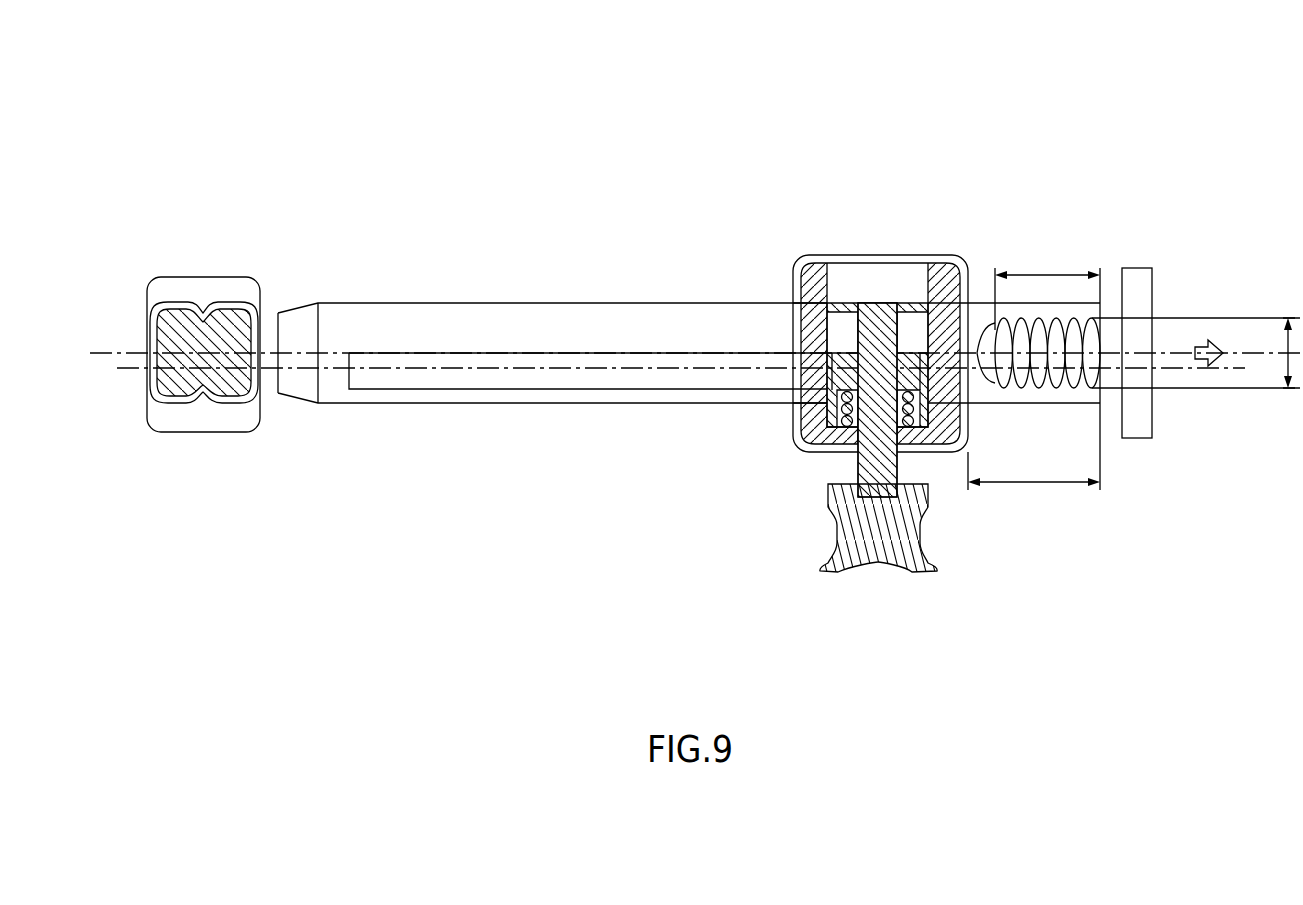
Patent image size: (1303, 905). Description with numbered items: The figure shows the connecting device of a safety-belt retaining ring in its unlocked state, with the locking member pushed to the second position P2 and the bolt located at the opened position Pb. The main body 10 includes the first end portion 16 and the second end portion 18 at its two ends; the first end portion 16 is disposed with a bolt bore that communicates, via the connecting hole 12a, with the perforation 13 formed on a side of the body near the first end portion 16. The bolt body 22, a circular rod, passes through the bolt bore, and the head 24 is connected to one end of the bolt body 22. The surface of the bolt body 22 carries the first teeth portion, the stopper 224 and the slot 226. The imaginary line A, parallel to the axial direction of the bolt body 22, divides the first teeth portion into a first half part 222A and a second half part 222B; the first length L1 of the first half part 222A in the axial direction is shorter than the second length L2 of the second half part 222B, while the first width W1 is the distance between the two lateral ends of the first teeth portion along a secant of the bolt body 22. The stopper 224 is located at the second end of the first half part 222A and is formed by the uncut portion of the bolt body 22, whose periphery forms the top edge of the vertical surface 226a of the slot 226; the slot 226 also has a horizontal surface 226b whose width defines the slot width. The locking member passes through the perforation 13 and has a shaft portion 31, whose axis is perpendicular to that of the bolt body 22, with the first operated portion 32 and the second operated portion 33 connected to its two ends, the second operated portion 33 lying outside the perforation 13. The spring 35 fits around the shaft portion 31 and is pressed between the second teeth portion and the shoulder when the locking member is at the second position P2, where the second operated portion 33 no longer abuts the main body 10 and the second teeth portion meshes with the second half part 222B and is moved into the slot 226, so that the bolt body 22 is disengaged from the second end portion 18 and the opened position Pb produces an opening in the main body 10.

The main body 10 is at (131, 372).
The imaginary line A is at (110, 353).
The second end portion 18 is at (198, 277).
The bolt body 22 is at (620, 303).
The slot 226 is at (488, 190).
The vertical surface 226a is at (420, 355).
The horizontal surface 226b is at (495, 368).
The first end portion 16 is at (806, 256).
The perforation 13 is at (906, 260).
The first operated portion 32 is at (858, 303).
The connecting hole 12a is at (852, 342).
The shaft portion 31 is at (857, 470).
The spring 35 is at (840, 412).
The second operated portion 33 is at (838, 532).
The second position P2 is at (828, 582).
The stopper 224 is at (983, 338).
The head 24 is at (1136, 440).
The opened position Pb is at (1137, 256).
The first half part 222A is at (1082, 340).
The second half part 222B is at (1095, 368).
The first length L1 is at (1047, 364).
The second length L2 is at (1034, 467).
The first width W1 is at (1277, 353).